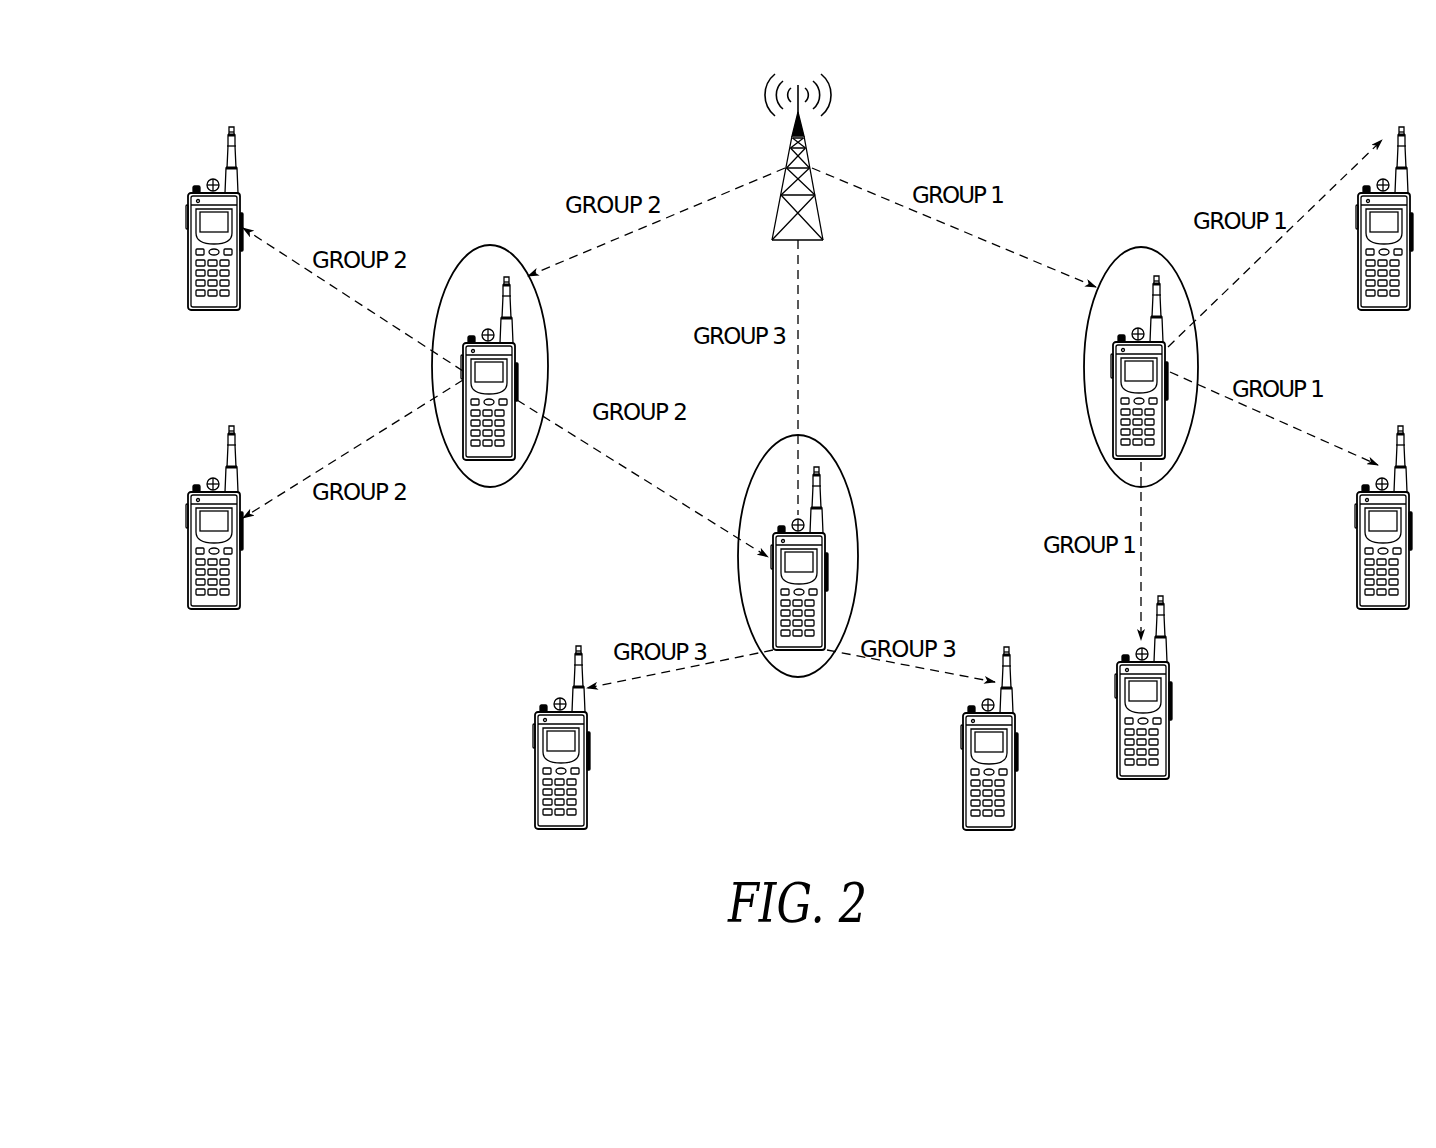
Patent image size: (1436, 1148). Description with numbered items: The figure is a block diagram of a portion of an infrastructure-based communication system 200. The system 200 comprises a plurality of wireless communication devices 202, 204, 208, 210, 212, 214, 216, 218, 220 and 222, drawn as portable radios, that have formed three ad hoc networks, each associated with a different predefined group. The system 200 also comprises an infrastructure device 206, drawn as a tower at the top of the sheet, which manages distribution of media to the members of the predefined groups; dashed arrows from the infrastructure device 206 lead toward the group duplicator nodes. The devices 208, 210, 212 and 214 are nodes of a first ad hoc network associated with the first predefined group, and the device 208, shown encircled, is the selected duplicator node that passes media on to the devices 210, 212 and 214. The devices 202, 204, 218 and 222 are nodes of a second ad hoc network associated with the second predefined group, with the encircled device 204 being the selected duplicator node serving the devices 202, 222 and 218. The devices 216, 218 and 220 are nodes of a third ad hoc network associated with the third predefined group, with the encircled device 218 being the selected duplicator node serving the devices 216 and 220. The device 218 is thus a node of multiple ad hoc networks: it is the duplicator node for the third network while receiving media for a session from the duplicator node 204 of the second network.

The infrastructure-based communication system 200 is at (1368, 848).
The wireless communication device 202 is at (188, 305).
The wireless communication device 204 is at (548, 342).
The infrastructure device 206 is at (806, 150).
The wireless communication device 208 is at (1140, 248).
The wireless communication device 210 is at (1358, 305).
The wireless communication device 212 is at (1357, 604).
The wireless communication device 214 is at (1117, 772).
The wireless communication device 216 is at (963, 822).
The wireless communication device 218 is at (800, 677).
The wireless communication device 220 is at (535, 822).
The wireless communication device 222 is at (188, 604).